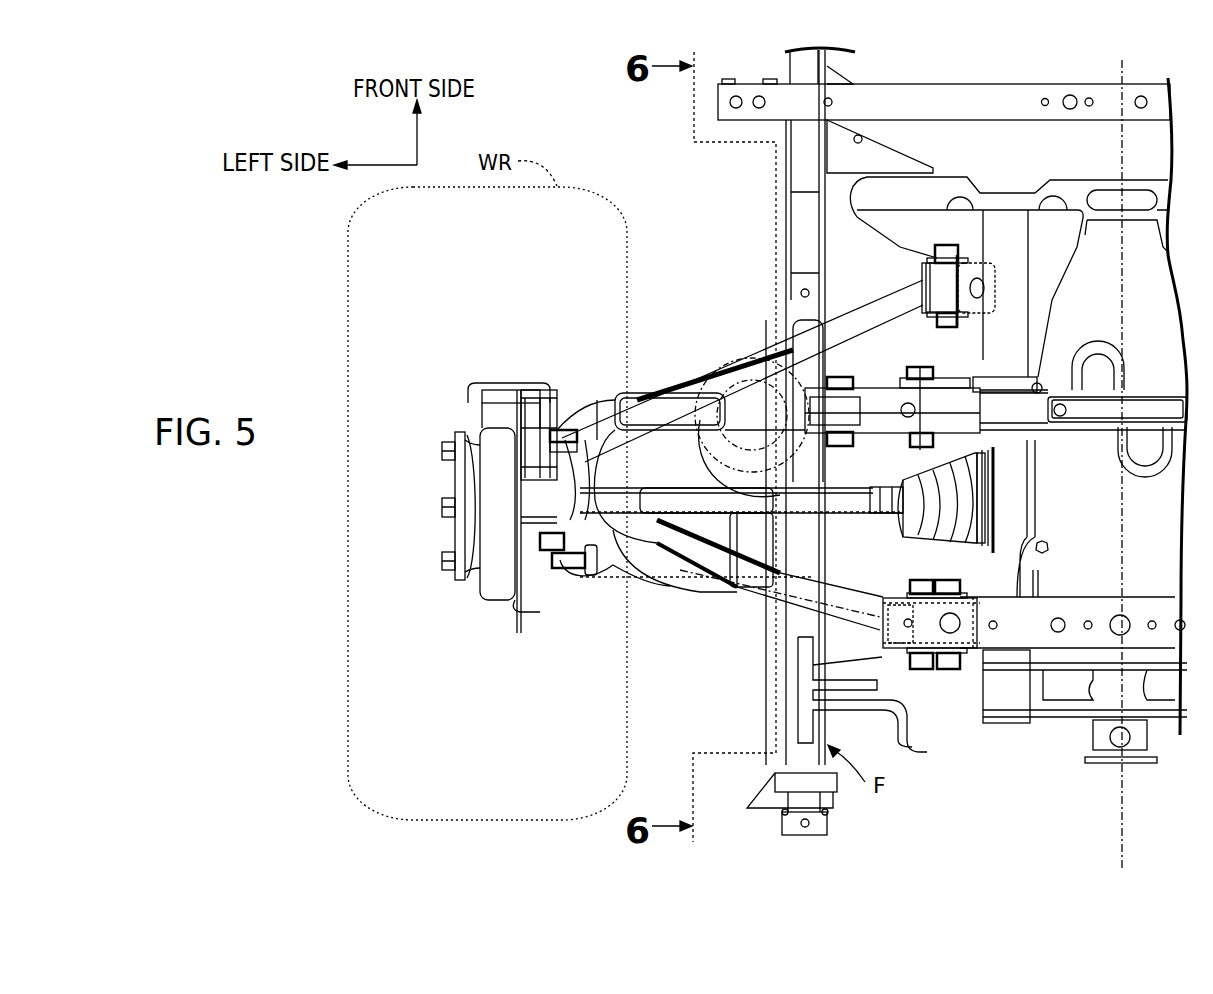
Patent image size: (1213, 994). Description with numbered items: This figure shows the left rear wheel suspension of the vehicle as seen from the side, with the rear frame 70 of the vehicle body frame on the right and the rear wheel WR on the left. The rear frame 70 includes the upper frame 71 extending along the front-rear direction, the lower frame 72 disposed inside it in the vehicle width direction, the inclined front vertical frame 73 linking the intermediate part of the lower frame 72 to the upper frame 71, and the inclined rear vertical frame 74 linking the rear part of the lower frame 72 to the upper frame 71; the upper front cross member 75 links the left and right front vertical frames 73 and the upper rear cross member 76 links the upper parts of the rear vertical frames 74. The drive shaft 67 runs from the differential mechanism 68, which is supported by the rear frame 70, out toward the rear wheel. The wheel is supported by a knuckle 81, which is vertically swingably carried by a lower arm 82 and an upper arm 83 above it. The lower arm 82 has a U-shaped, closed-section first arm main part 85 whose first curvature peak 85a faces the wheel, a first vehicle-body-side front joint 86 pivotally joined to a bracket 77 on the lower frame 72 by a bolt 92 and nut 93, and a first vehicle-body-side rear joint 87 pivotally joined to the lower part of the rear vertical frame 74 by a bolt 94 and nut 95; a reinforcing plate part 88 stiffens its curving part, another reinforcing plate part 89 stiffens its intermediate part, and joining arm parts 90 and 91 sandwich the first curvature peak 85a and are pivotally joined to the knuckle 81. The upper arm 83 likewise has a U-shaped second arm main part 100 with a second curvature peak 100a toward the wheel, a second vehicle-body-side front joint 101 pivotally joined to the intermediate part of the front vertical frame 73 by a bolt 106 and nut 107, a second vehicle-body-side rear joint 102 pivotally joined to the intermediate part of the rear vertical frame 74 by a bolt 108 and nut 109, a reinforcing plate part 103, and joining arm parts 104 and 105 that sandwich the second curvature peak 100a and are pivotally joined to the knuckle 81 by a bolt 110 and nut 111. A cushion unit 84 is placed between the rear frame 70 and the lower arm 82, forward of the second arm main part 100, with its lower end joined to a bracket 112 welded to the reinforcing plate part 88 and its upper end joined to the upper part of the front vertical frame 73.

The drive shaft 67 is at (847, 507).
The differential mechanism 68 is at (990, 483).
The rear frame 70 is at (952, 680).
The upper frame 71 is at (798, 692).
The lower frame 72 is at (1017, 343).
The front vertical frame 73 is at (892, 386).
The rear vertical frame 74 is at (1010, 542).
The upper front cross member 75 is at (1148, 397).
The upper rear cross member 76 is at (1092, 607).
The bracket 77 is at (965, 268).
The knuckle 81 is at (527, 485).
The lower arm 82 is at (748, 334).
The upper arm 83 is at (699, 604).
The cushion unit 84 is at (723, 357).
The first arm main part 85 is at (690, 555).
The first curvature peak 85a is at (597, 400).
The first vehicle-body-side front joint 86 is at (920, 290).
The first vehicle-body-side rear joint 87 is at (980, 608).
The reinforcing plate part 88 is at (688, 452).
The reinforcing plate part 89 is at (772, 375).
The joining arm part 90 is at (607, 410).
The joining arm part 91 is at (587, 578).
The bolt 92 is at (945, 262).
The nut 93 is at (957, 327).
The bolt 94 is at (947, 585).
The nut 95 is at (960, 663).
The second arm main part 100 is at (650, 590).
The second curvature peak 100a is at (537, 533).
The second vehicle-body-side front joint 101 is at (960, 405).
The second vehicle-body-side rear joint 102 is at (903, 633).
The reinforcing plate part 103 is at (752, 567).
The joining arm part 104 is at (560, 428).
The joining arm part 105 is at (587, 568).
The bolt 106 is at (927, 355).
The nut 107 is at (910, 447).
The bolt 108 is at (907, 585).
The nut 109 is at (927, 673).
The bolt 110 is at (500, 405).
The nut 111 is at (515, 600).
The bracket 112 is at (683, 380).